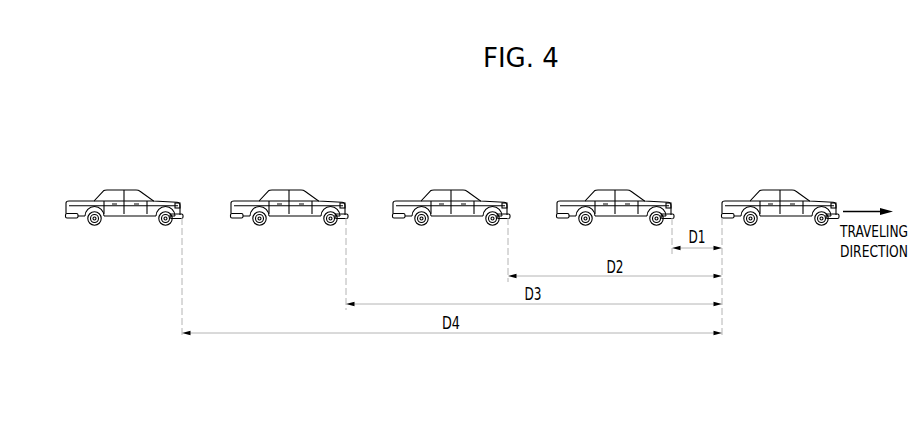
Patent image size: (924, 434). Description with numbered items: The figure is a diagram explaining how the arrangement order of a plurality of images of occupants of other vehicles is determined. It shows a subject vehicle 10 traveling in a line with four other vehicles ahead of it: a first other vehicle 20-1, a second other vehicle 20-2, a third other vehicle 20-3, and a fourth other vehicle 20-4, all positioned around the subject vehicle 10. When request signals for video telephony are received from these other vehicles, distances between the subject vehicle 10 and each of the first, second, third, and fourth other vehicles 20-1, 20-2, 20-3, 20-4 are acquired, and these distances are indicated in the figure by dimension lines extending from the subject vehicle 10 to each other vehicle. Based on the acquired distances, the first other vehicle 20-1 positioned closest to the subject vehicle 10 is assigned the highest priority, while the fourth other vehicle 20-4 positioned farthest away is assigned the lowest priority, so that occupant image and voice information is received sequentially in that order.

The subject vehicle 10 is at (774, 190).
The first other vehicle 20-1 is at (610, 190).
The second other vehicle 20-2 is at (446, 190).
The third other vehicle 20-3 is at (284, 190).
The fourth other vehicle 20-4 is at (120, 190).